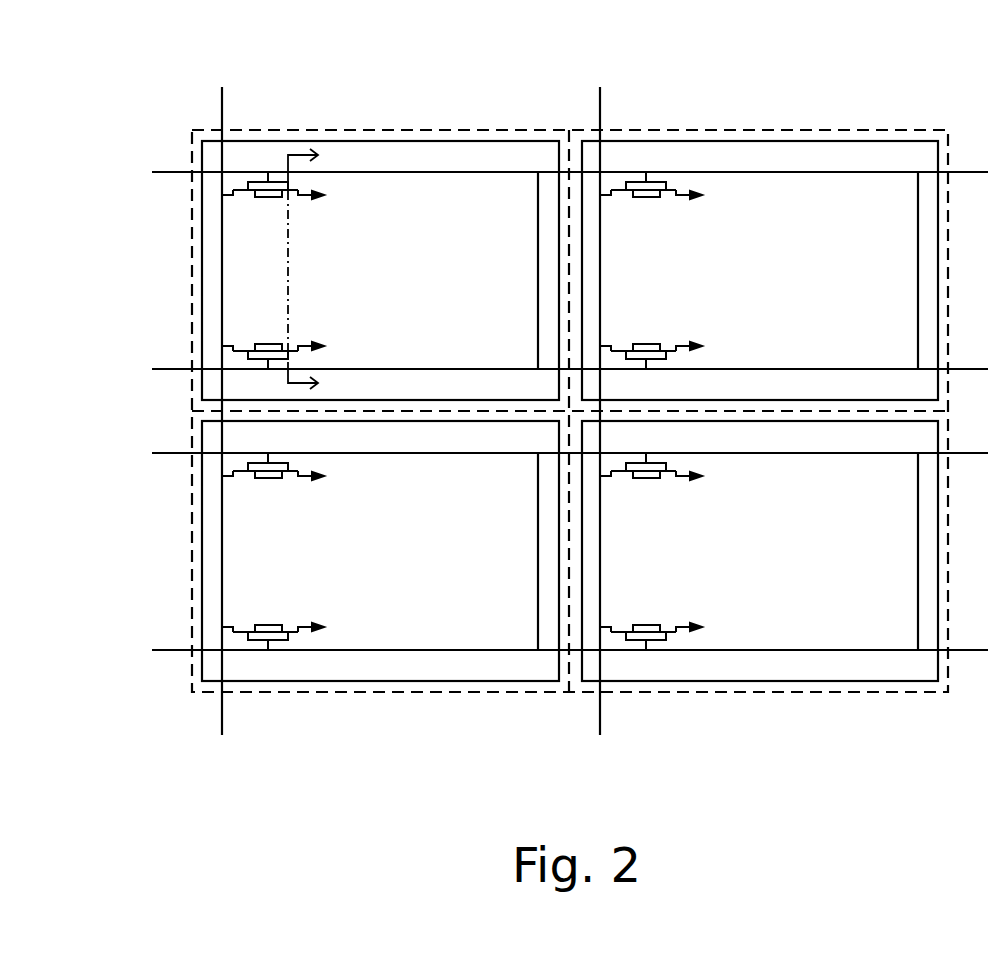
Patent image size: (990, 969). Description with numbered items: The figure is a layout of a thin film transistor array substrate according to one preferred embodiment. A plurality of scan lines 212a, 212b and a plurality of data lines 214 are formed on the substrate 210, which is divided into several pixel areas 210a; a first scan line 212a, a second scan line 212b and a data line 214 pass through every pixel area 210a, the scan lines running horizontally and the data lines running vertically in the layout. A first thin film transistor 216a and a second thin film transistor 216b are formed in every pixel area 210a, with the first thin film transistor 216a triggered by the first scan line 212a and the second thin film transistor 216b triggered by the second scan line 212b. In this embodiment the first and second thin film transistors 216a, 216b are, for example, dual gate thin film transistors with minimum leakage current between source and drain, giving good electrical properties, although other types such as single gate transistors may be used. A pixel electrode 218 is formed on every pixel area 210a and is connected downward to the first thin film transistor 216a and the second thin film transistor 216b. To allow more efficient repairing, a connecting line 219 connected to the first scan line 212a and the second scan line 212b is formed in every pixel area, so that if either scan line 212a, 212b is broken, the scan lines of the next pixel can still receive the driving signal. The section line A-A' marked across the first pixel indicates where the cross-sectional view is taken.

The substrate 210 is at (145, 139).
The pixel area 210a is at (354, 128).
The first scan line 212a is at (172, 173).
The second scan line 212b is at (172, 367).
The data line 214 is at (223, 118).
The first thin film transistor 216a is at (268, 197).
The second thin film transistor 216b is at (268, 343).
The pixel electrode 218 is at (430, 139).
The connecting line 219 is at (538, 218).